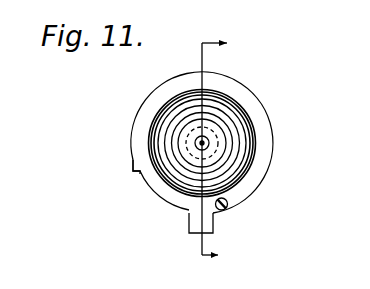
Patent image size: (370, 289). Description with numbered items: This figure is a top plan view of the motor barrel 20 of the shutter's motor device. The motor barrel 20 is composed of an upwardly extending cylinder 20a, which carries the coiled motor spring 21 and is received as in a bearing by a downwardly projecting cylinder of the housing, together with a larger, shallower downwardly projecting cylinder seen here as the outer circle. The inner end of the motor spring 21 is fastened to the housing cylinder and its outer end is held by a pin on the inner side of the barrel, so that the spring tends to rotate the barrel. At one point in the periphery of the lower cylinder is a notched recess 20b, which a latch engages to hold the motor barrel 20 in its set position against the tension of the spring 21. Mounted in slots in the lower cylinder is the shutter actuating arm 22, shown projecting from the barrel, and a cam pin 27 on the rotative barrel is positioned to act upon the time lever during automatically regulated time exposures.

The motor barrel 20 is at (263, 119).
The upwardly extending cylinder 20a is at (195, 143).
The notched recess 20b is at (137, 172).
The motor spring 21 is at (238, 107).
The shutter actuating arm 22 is at (188, 223).
The cam pin 27 is at (228, 208).